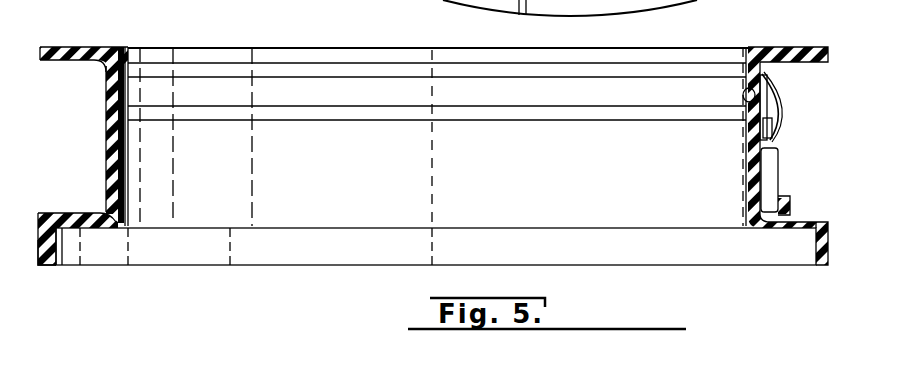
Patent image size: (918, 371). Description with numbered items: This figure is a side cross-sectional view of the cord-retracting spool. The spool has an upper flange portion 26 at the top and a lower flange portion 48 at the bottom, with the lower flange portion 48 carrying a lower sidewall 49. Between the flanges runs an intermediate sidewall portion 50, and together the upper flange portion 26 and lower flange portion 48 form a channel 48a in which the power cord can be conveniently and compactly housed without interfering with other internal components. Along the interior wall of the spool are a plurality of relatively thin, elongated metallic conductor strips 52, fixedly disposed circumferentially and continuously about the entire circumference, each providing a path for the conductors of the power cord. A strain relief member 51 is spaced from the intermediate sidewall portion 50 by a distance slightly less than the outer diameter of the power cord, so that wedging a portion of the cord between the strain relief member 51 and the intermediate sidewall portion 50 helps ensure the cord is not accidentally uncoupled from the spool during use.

The upper flange portion 26 is at (76, 47).
The intermediate sidewall portion 50 is at (106, 118).
The lower flange portion 48 is at (72, 213).
The lower sidewall 49 is at (40, 243).
The conductor strip 52 is at (258, 108).
The channel 48a is at (808, 130).
The strain relief member 51 is at (785, 198).